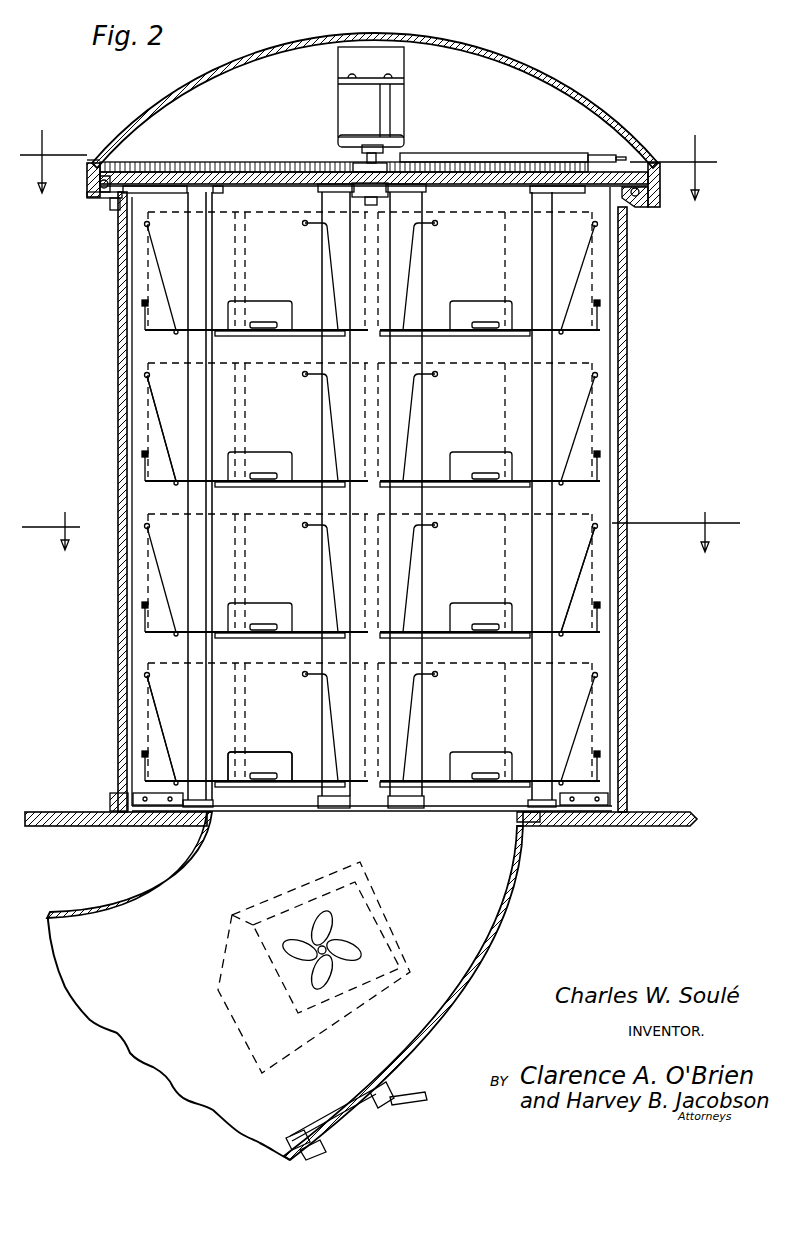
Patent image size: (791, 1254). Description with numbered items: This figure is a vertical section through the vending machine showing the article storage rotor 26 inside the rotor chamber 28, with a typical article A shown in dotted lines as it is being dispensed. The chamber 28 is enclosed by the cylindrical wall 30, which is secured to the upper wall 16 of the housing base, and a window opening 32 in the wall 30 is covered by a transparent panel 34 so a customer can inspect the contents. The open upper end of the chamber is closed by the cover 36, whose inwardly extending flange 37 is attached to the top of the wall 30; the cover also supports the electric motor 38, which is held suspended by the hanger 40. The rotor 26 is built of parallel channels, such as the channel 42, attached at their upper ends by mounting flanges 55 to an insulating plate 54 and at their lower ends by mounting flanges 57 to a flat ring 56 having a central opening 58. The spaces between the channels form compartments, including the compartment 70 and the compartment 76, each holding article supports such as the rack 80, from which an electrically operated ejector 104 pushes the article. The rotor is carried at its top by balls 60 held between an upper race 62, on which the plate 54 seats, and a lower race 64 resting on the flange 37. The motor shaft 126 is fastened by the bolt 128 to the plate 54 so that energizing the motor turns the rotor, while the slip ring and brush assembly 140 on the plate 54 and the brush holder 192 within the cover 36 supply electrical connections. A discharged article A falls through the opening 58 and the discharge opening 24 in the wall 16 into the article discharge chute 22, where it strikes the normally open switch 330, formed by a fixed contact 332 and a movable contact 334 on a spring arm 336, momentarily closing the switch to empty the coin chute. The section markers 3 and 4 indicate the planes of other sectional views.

The upper wall 16 is at (690, 815).
The article discharge chute 22 is at (487, 937).
The discharge opening 24 is at (522, 830).
The article storage rotor 26 is at (567, 503).
The rotor chamber 28 is at (617, 330).
The cylindrical wall 30 is at (626, 418).
The window opening 32 is at (120, 210).
The transparent panel 34 is at (120, 325).
The cover 36 is at (485, 52).
The inwardly extending flange 37 is at (92, 196).
The electric motor 38 is at (398, 97).
The hanger 40 is at (352, 55).
The channel 42 is at (147, 402).
The plate 54 is at (150, 172).
The mounting flanges 55 is at (170, 178).
The flat ring 56 is at (148, 808).
The mounting flanges 57 is at (153, 798).
The central opening 58 is at (233, 811).
The balls 60 is at (112, 175).
The upper race 62 is at (90, 175).
The lower race 64 is at (108, 198).
The compartment 70 is at (580, 648).
The compartment 76 is at (150, 497).
The rack 80 is at (215, 778).
The ejector 104 is at (148, 700).
The shaft 126 is at (362, 157).
The bolt 128 is at (355, 192).
The slip ring and brush assembly 140 is at (525, 167).
The brush holder 192 is at (468, 160).
The switch 330 is at (315, 1130).
The fixed contact 332 is at (325, 1148).
The movable contact 334 is at (293, 1138).
The spring arm 336 is at (352, 1113).
The article A is at (240, 916).
The section line 3- 3 is at (368, 165).
The section line 4- 4 is at (381, 532).